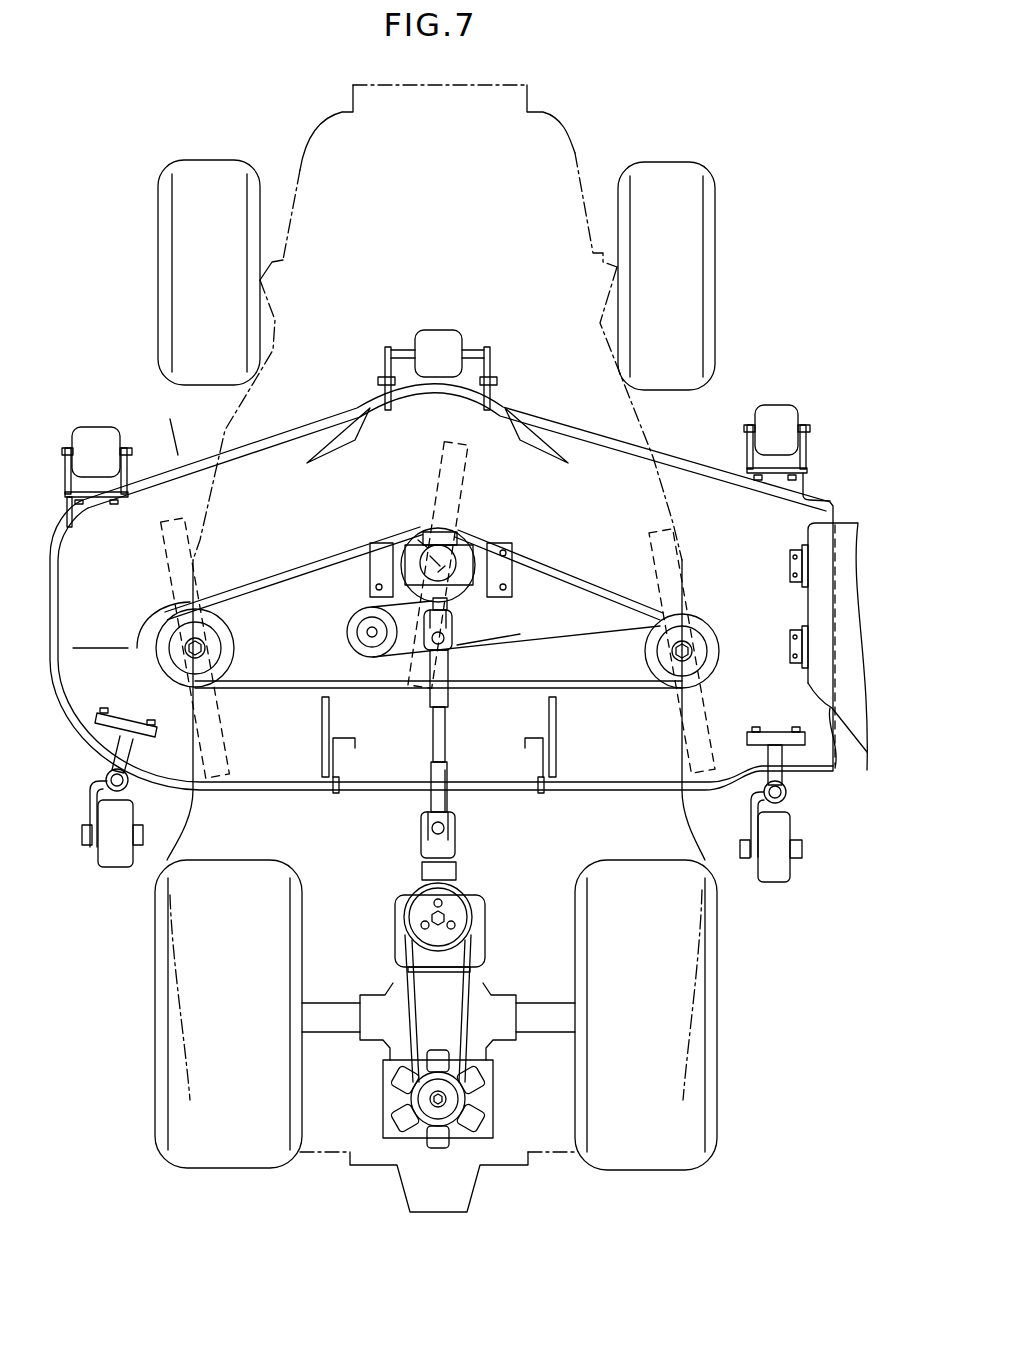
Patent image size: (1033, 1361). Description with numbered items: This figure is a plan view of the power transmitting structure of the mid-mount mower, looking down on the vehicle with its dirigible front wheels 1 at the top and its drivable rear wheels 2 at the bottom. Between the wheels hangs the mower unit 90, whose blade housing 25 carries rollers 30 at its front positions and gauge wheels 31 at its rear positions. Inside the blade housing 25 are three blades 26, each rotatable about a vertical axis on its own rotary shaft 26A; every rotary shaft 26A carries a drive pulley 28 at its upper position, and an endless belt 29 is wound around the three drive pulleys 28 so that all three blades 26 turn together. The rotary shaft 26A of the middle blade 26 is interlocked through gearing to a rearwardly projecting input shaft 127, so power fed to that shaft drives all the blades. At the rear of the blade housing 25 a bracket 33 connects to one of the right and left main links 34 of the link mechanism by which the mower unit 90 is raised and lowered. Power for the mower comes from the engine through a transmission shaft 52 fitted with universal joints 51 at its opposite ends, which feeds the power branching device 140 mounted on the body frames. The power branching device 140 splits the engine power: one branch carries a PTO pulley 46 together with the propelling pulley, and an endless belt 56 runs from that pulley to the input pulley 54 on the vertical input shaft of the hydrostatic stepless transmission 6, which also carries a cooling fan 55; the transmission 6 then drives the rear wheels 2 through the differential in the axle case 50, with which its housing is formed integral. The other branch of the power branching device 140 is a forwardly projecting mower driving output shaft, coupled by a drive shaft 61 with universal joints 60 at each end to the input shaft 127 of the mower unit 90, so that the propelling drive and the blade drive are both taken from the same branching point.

The front wheels 1 is at (158, 247).
The rear wheels 2 is at (155, 1072).
The hydrostatic stepless transmission (HST) 6 is at (372, 1112).
The blade housing 25 is at (283, 452).
The blades 26 is at (440, 470).
The rotary shaft 26A is at (420, 548).
The drive pulley 28 is at (450, 540).
The endless belt 29 is at (258, 585).
The rollers 30 is at (440, 330).
The gauge wheels 31 is at (115, 870).
The bracket 33 is at (333, 778).
The main links 34 is at (322, 722).
The PTO pulley 46 is at (470, 915).
The axle case 50 is at (381, 975).
The universal joints 51 is at (420, 845).
The transmission shaft 52 is at (445, 770).
The input pulley 54 is at (465, 1100).
The cooling fan 55 is at (400, 1125).
The endless belt 56 is at (478, 1035).
The universal joints 60 is at (448, 640).
The drive shaft 61 is at (432, 728).
The mower unit 90 is at (181, 444).
The input shaft 127 is at (448, 600).
The power branching device 140 is at (498, 902).